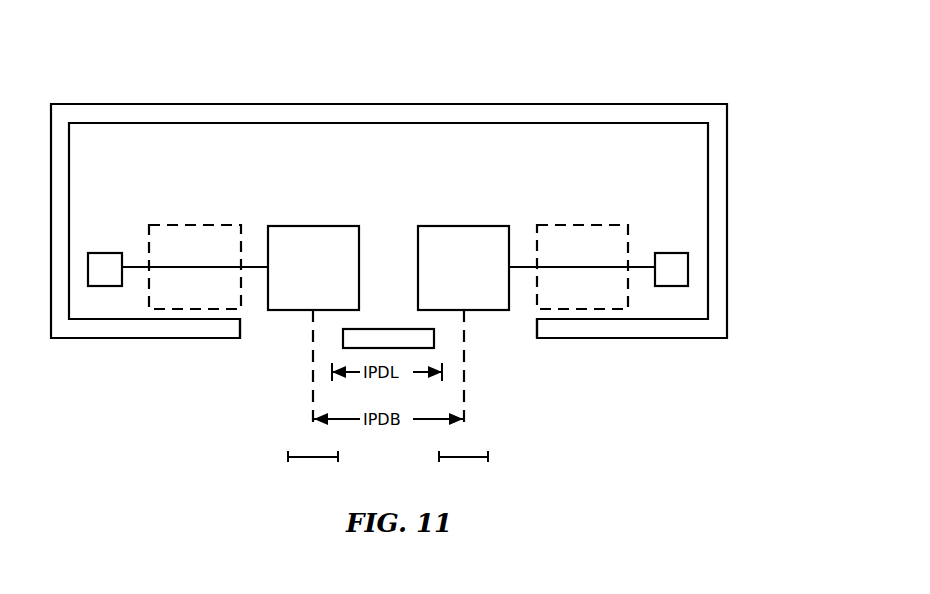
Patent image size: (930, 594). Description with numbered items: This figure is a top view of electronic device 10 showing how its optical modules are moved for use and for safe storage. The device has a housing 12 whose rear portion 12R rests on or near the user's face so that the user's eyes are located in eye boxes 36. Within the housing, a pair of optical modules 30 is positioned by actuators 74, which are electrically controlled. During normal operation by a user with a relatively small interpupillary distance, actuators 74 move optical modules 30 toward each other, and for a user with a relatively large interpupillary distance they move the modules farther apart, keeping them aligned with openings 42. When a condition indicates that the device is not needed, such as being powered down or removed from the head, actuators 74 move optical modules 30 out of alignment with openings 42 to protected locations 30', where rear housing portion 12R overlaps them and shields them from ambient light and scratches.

The electronic device 10 is at (708, 58).
The housing 12 is at (716, 206).
The rear portion 12R is at (154, 330).
The optical modules 30 is at (388, 241).
The protected locations 30' is at (388, 236).
The actuators 74 is at (104, 263).
The openings 42 is at (276, 362).
The eye boxes 36 is at (288, 457).